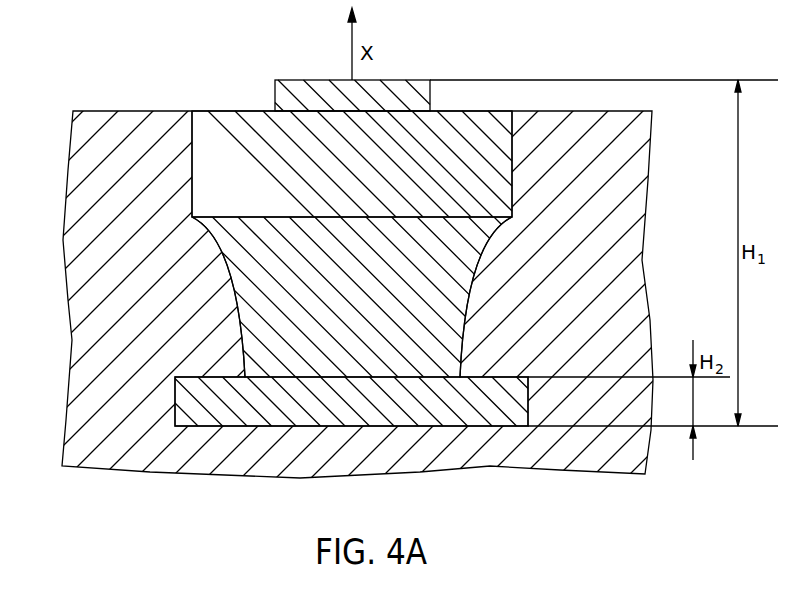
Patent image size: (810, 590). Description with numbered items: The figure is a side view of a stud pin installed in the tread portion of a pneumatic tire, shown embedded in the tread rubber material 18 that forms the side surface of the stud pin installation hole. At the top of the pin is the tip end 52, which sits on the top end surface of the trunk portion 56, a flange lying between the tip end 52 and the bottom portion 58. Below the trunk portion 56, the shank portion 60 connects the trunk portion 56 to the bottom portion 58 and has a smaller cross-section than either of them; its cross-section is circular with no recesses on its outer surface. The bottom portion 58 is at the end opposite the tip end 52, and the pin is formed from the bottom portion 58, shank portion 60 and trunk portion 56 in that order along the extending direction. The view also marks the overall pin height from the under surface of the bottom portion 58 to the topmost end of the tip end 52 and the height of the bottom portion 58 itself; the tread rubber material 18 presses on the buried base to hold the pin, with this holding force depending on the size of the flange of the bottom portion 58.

The tread rubber material 18 is at (565, 117).
The tip end 52 is at (432, 97).
The trunk portion 56 is at (235, 112).
The bottom portion 58 is at (380, 423).
The shank portion 60 is at (297, 355).